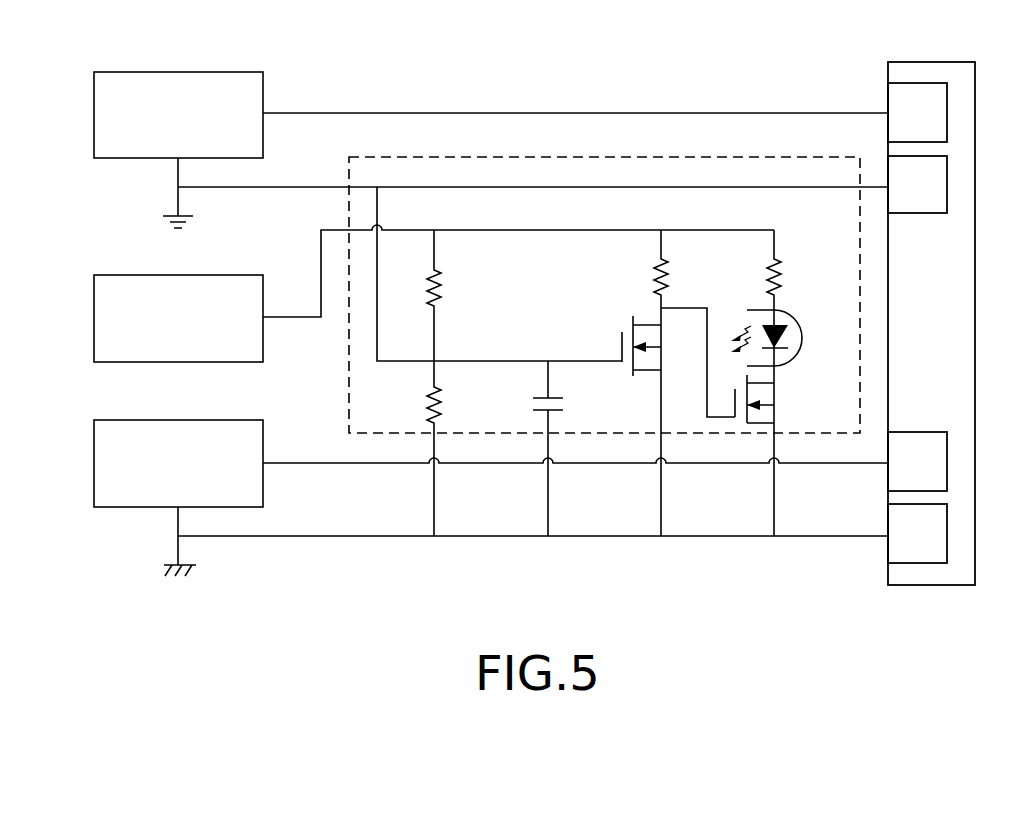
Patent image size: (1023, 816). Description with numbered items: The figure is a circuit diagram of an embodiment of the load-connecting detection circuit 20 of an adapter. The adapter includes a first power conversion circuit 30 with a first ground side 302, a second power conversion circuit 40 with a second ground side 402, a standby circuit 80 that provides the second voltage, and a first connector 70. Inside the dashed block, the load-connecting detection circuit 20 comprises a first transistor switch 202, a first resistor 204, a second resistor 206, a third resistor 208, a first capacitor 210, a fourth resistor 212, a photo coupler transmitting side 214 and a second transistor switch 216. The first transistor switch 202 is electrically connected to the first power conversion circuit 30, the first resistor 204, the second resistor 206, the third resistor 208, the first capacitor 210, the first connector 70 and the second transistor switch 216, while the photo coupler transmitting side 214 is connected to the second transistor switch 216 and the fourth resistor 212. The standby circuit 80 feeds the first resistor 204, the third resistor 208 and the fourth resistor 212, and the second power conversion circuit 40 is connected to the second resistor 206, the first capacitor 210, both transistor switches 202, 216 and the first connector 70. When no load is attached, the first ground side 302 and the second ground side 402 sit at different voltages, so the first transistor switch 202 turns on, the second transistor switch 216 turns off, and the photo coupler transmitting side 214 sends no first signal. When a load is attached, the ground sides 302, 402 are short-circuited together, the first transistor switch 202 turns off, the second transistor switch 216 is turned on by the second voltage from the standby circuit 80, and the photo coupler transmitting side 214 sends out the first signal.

The load-connecting detection circuit 20 is at (603, 165).
The first power conversion circuit 30 is at (178, 80).
The first ground side 302 is at (178, 173).
The second power conversion circuit 40 is at (178, 429).
The second ground side 402 is at (178, 523).
The first connector 70 is at (930, 68).
The standby circuit 80 is at (178, 283).
The first transistor switch 202 is at (678, 422).
The first resistor 204 is at (460, 295).
The second resistor 206 is at (460, 448).
The third resistor 208 is at (687, 269).
The first capacitor 210 is at (572, 448).
The fourth resistor 212 is at (800, 270).
The photo coupler transmitting side 214 is at (791, 423).
The second transistor switch 216 is at (780, 399).